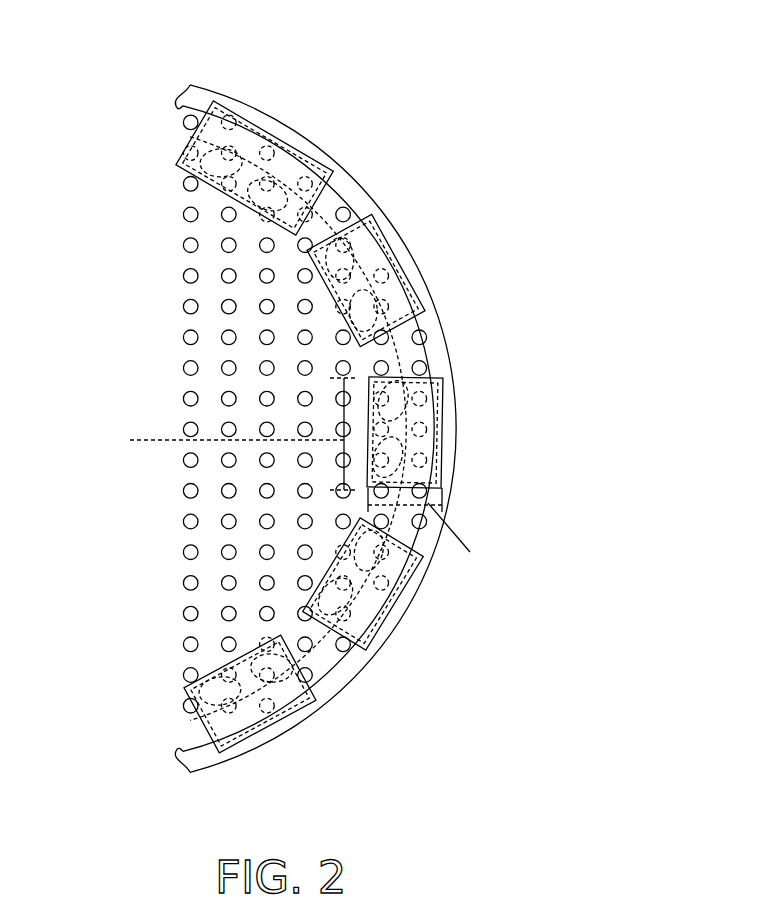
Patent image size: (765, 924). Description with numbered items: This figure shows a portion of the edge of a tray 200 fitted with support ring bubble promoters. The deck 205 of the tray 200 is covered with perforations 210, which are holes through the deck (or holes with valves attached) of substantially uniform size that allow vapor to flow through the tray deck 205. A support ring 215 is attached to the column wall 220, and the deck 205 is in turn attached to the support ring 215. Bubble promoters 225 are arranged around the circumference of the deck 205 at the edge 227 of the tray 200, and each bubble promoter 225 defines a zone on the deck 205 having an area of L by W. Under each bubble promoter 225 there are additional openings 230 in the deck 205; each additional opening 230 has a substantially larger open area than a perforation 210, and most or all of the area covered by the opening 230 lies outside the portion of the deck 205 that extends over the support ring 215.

The tray 200 is at (576, 59).
The deck 205 is at (86, 325).
The perforations 210 is at (303, 369).
The support ring 215 is at (347, 193).
The column wall 220 is at (422, 337).
The bubble promoters 225 is at (277, 133).
The edge 227 is at (432, 330).
The additional openings 230 is at (230, 152).